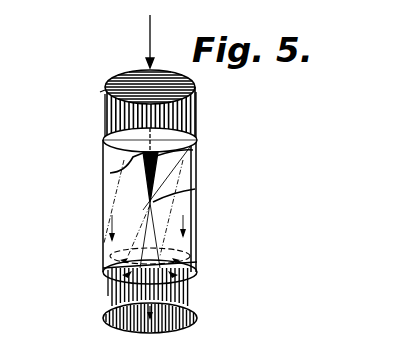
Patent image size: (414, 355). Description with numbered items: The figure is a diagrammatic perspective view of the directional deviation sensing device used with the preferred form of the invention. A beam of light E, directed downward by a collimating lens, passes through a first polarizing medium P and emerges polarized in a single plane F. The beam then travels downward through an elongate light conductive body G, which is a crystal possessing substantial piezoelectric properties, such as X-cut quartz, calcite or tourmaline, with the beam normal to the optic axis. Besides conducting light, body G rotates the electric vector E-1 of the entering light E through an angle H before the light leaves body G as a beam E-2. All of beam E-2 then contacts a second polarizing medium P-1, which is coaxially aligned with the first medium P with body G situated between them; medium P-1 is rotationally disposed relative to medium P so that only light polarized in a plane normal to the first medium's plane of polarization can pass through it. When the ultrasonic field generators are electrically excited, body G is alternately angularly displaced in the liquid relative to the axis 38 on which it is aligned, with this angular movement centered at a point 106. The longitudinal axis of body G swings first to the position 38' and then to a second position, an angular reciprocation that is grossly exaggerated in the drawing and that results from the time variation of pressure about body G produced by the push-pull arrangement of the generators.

The single plane of polarization F is at (192, 84).
The beam of light E is at (198, 112).
The first polarizing medium P is at (100, 92).
The light conductive body G is at (199, 176).
The axis 38 is at (126, 207).
The first displaced position 38' is at (200, 148).
The center point of angular movement 106 is at (195, 189).
The electric vector E-1 is at (195, 248).
The exit light beam E-2 is at (113, 291).
The angle of rotation H is at (80, 282).
The second polarizing medium P-1 is at (195, 318).